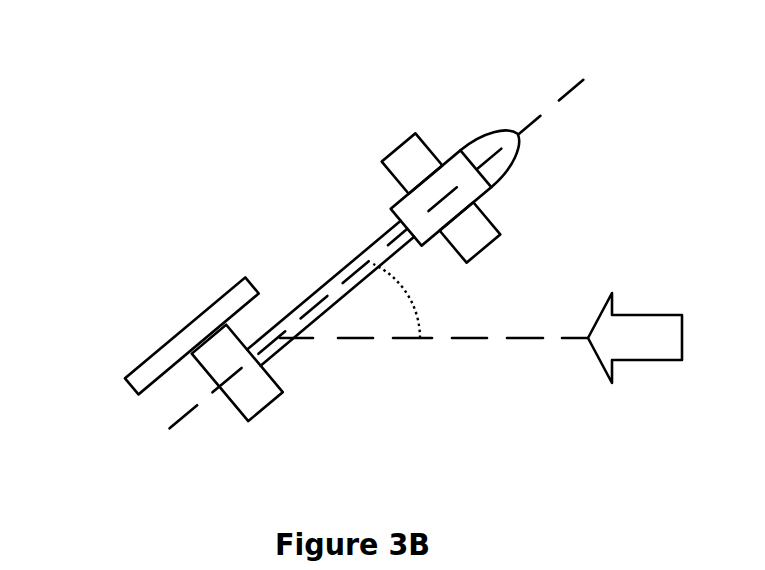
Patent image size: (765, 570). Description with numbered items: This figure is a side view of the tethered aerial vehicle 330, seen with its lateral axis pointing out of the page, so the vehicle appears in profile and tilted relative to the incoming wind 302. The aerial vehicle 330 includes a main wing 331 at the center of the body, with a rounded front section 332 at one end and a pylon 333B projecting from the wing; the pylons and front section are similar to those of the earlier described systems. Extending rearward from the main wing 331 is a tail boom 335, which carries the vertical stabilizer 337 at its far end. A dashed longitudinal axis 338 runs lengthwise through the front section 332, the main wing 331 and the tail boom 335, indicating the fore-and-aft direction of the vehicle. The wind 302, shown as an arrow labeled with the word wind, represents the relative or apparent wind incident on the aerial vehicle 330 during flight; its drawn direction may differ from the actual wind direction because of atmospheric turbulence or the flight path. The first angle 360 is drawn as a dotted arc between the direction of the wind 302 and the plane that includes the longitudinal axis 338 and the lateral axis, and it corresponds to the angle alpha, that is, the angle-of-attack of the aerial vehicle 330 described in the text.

The aerial vehicle 330 is at (80, 66).
The main wing 331 is at (388, 207).
The front section 332 is at (473, 142).
The pylon 333B is at (397, 147).
The tail boom 335 is at (322, 283).
The vertical stabilizer 337 is at (248, 418).
The longitudinal axis 338 is at (540, 117).
The first angle 360 is at (416, 290).
The wind 302 is at (630, 362).